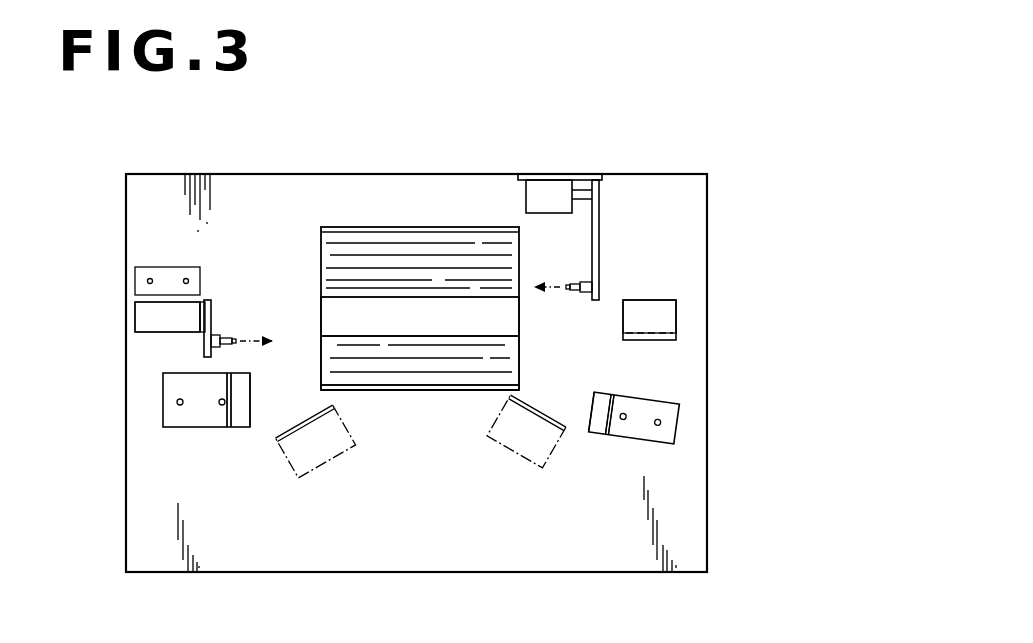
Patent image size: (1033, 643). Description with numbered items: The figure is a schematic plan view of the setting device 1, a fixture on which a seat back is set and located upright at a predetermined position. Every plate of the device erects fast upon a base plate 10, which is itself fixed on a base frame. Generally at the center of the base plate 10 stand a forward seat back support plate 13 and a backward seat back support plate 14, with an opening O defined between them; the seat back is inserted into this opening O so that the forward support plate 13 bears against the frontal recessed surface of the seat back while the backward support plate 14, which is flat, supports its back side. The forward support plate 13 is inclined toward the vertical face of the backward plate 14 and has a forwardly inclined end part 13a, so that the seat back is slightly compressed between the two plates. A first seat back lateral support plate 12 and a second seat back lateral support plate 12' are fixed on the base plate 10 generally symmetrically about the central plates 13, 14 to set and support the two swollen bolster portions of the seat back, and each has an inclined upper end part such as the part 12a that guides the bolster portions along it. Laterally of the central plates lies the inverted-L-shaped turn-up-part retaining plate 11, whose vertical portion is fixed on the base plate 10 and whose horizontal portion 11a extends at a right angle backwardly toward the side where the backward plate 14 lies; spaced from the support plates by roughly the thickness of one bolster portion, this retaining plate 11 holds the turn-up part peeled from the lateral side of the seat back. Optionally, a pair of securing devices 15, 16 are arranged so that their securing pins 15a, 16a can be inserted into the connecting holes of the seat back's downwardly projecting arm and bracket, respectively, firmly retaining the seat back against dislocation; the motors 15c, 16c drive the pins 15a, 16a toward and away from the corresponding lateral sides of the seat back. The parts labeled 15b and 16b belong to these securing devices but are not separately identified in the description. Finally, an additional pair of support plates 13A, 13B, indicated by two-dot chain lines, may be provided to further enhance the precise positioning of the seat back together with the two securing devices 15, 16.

The setting device 1 is at (711, 515).
The base plate 10 is at (415, 538).
The turn-up-part retaining plate 11 is at (670, 321).
The horizontal portion 11a is at (662, 305).
The first seat back lateral support plate 12 is at (166, 425).
The inclined upper end part 12a is at (246, 428).
The second seat back lateral support plate 12' is at (676, 402).
The forward seat back support plate 13 is at (405, 391).
The forwardly inclined end part 13a is at (466, 386).
The support plate 13A is at (310, 470).
The support plate 13B is at (527, 458).
The backward seat back support plate 14 is at (386, 246).
The securing device 15 is at (147, 258).
The securing pin 15a is at (226, 340).
The pusher plate 15b is at (212, 303).
The motor 15c is at (142, 314).
The securing device 16 is at (618, 160).
The securing pin 16a is at (578, 293).
The pusher arm 16b is at (600, 237).
The motor 16c is at (552, 188).
The opening O is at (443, 313).